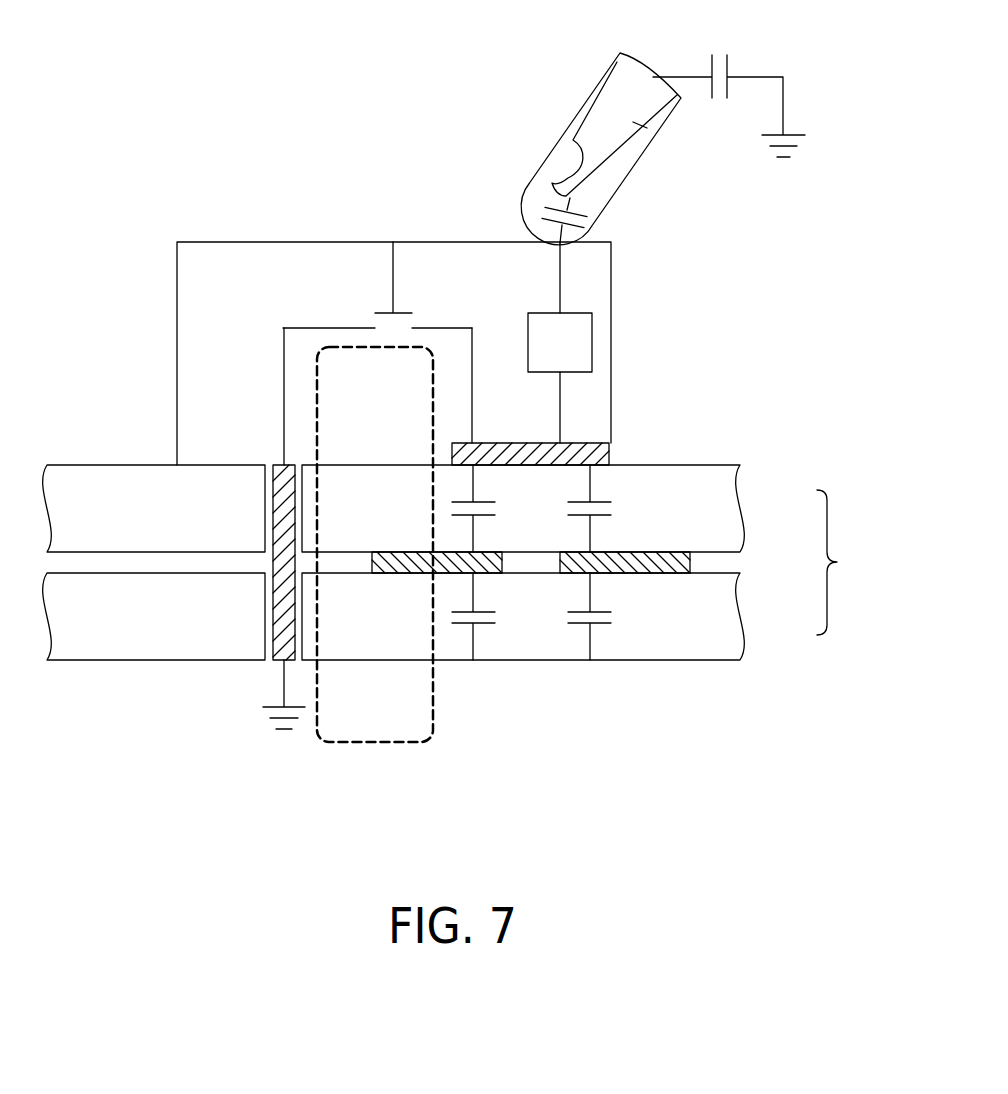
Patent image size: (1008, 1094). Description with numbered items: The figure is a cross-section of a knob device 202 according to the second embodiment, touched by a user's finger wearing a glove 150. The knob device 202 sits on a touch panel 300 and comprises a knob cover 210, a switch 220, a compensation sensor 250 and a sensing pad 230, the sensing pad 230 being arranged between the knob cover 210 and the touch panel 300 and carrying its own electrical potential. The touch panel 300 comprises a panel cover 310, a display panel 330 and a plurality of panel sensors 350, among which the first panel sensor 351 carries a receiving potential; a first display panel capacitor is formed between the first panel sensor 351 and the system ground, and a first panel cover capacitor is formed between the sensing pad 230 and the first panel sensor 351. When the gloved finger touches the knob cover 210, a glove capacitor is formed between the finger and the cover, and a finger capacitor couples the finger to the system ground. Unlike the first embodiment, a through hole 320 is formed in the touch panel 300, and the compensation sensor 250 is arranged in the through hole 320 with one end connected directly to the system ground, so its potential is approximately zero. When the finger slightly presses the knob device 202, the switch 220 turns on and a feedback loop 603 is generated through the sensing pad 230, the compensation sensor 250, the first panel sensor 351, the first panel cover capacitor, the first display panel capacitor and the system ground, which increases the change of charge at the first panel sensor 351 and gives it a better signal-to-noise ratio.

The glove 150 is at (555, 147).
The knob device 202 is at (235, 180).
The knob cover 210 is at (313, 242).
The switch 220 is at (393, 278).
The sensing pad 230 is at (605, 455).
The compensation sensor 250 is at (283, 597).
The touch panel 300 is at (836, 562).
The panel cover 310 is at (740, 503).
The through hole 320 is at (297, 462).
The display panel 330 is at (740, 612).
The panel sensors 350 is at (662, 565).
The first panel sensor 351 is at (405, 563).
The feedback loop 603 is at (375, 742).